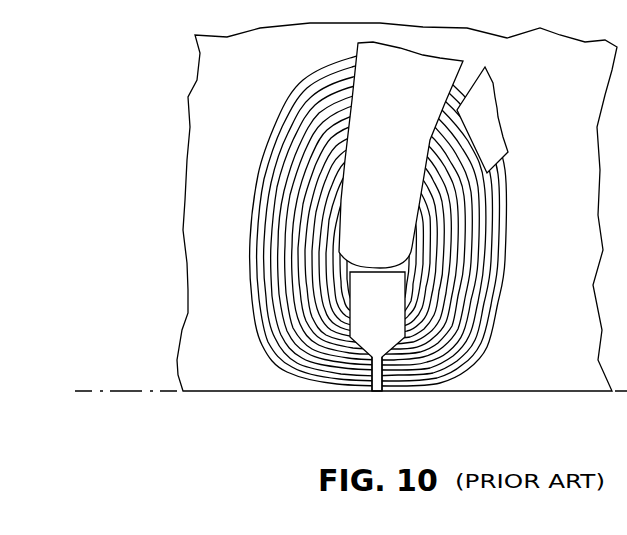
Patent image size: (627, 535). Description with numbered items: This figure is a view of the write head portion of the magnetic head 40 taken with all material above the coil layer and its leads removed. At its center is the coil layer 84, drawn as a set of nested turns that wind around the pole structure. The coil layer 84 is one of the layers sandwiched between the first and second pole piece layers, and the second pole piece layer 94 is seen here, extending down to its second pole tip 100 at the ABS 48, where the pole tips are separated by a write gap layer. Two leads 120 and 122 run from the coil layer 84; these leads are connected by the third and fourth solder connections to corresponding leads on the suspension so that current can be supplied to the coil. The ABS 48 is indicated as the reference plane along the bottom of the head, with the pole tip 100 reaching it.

The magnetic head 40 is at (520, 205).
The ABS 48 is at (128, 390).
The coil layer 84 is at (476, 292).
The second pole piece layer 94 is at (390, 320).
The second pole tip 100 is at (373, 392).
The lead 120 is at (406, 152).
The lead 122 is at (497, 108).